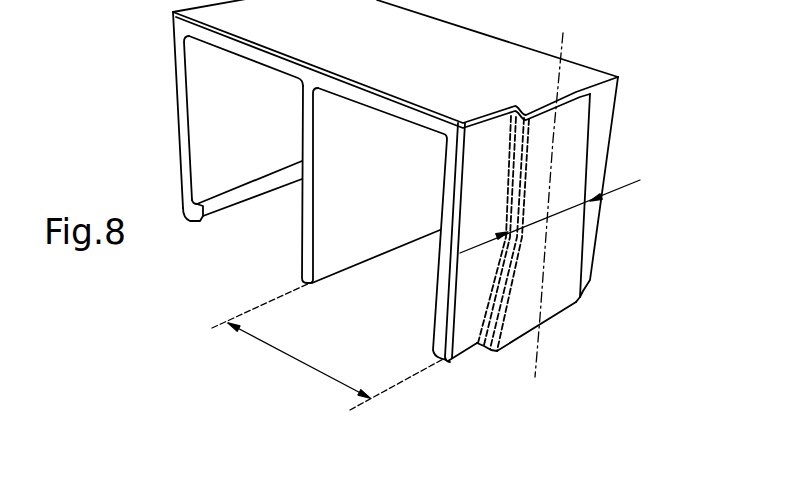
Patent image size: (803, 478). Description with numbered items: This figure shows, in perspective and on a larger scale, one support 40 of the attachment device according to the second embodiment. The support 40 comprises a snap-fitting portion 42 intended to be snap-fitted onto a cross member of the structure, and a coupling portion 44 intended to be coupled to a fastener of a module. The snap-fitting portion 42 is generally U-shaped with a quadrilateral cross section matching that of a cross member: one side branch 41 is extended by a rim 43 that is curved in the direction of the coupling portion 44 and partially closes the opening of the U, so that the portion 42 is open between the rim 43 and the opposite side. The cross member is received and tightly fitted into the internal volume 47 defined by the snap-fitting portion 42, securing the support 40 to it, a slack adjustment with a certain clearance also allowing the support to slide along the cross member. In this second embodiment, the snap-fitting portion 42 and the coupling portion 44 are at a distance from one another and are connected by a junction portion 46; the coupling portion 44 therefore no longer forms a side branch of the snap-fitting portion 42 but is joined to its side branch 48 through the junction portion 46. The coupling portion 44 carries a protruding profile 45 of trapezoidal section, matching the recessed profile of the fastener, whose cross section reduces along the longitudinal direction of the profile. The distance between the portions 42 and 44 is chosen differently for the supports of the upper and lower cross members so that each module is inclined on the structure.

The support 40 is at (138, 72).
The side branch 41 is at (175, 117).
The snap-fitting portion 42 is at (297, 292).
The rim 43 is at (230, 188).
The coupling portion 44 is at (607, 94).
The protruding profile 45 is at (556, 282).
The junction portion 46 is at (397, 112).
The internal volume 47 is at (263, 125).
The side branch 48 is at (353, 237).